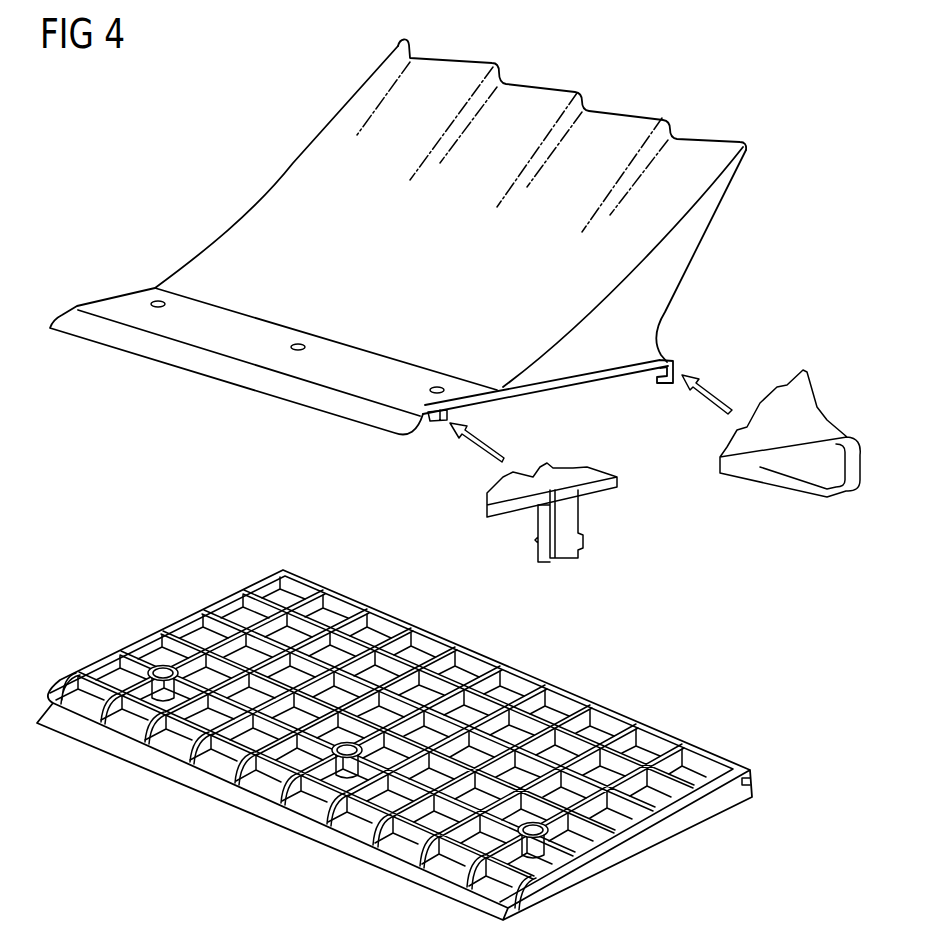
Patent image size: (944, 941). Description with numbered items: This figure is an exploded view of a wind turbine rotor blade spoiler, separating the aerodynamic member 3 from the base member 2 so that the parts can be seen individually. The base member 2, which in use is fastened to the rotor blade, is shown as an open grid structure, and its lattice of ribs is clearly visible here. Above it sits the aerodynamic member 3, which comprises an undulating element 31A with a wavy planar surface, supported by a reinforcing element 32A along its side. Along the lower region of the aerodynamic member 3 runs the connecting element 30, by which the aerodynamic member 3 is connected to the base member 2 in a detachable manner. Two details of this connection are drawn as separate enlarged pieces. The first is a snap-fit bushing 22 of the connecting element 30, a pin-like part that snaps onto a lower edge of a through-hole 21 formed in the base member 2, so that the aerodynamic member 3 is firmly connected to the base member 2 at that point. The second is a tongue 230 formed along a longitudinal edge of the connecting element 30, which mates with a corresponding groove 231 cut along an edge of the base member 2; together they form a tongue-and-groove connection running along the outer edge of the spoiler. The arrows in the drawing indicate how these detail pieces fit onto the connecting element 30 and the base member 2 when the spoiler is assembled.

The aerodynamic member 3 is at (232, 247).
The undulating element 31A is at (547, 108).
The reinforcing element 32A is at (658, 288).
The connecting element 30 is at (567, 382).
The snap-fit bushing 22 is at (567, 523).
The tongue 230 is at (840, 488).
The groove 231 is at (750, 778).
The base member 2 is at (675, 817).
The through-hole 21 is at (548, 826).